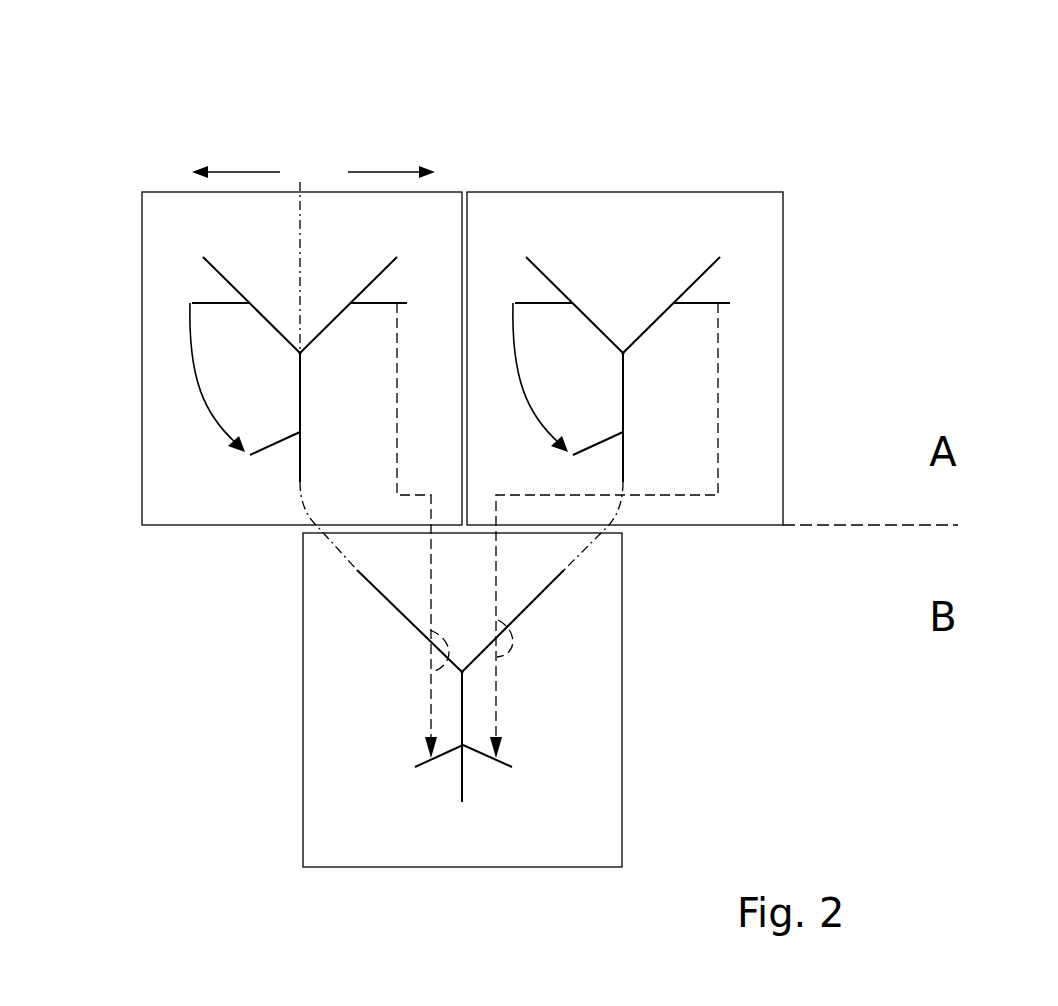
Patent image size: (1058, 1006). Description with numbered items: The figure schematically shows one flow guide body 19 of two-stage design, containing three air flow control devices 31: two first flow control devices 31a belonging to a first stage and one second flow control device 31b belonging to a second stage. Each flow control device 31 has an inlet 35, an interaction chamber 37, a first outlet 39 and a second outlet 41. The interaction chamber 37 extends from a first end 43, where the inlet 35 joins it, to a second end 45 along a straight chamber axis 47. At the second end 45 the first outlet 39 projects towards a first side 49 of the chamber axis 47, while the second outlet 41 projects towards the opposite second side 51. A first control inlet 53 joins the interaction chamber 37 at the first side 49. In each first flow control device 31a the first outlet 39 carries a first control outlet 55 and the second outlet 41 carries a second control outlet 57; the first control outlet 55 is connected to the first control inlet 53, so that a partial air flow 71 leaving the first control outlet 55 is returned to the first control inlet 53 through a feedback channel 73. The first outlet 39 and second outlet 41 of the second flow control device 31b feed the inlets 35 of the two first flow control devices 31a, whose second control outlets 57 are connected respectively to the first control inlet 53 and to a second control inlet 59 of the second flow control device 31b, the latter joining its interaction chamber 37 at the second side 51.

The flow guide body 19 is at (178, 92).
The air flow control device 31 is at (199, 550).
The first flow control device 31a is at (142, 338).
The second flow control device 31b is at (622, 722).
The inlet 35 is at (302, 473).
The interaction chamber 37 is at (302, 388).
The first outlet 39 is at (218, 268).
The second outlet 41 is at (375, 277).
The first end 43 is at (302, 457).
The second end 45 is at (298, 358).
The chamber axis 47 is at (302, 220).
The first side 49 is at (247, 172).
The second side 51 is at (383, 172).
The first control inlet 53 is at (273, 443).
The first control outlet 55 is at (212, 300).
The second control outlet 57 is at (387, 300).
The second control inlet 59 is at (507, 767).
The partial air flow 71 is at (470, 530).
The feedback channel 73 is at (203, 388).